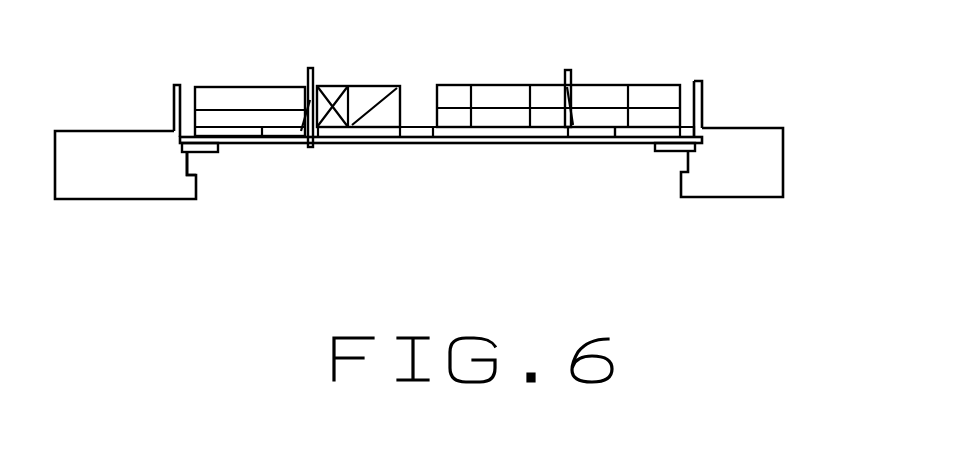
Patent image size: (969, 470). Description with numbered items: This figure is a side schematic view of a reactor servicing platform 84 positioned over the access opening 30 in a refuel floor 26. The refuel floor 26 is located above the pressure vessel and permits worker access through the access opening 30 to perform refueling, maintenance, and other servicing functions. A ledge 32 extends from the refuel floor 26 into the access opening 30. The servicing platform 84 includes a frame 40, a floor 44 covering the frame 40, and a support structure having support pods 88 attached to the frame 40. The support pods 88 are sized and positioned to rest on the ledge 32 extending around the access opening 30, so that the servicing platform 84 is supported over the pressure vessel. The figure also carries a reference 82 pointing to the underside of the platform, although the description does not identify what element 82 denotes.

The refuel floor 26 is at (97, 182).
The ledge 32 is at (190, 173).
The support pods 88 is at (212, 152).
The frame 40 is at (422, 145).
The floor 44 is at (420, 134).
The access opening 30 is at (345, 157).
The reactor servicing platform 84 is at (475, 50).
The base segment 82 is at (638, 157).